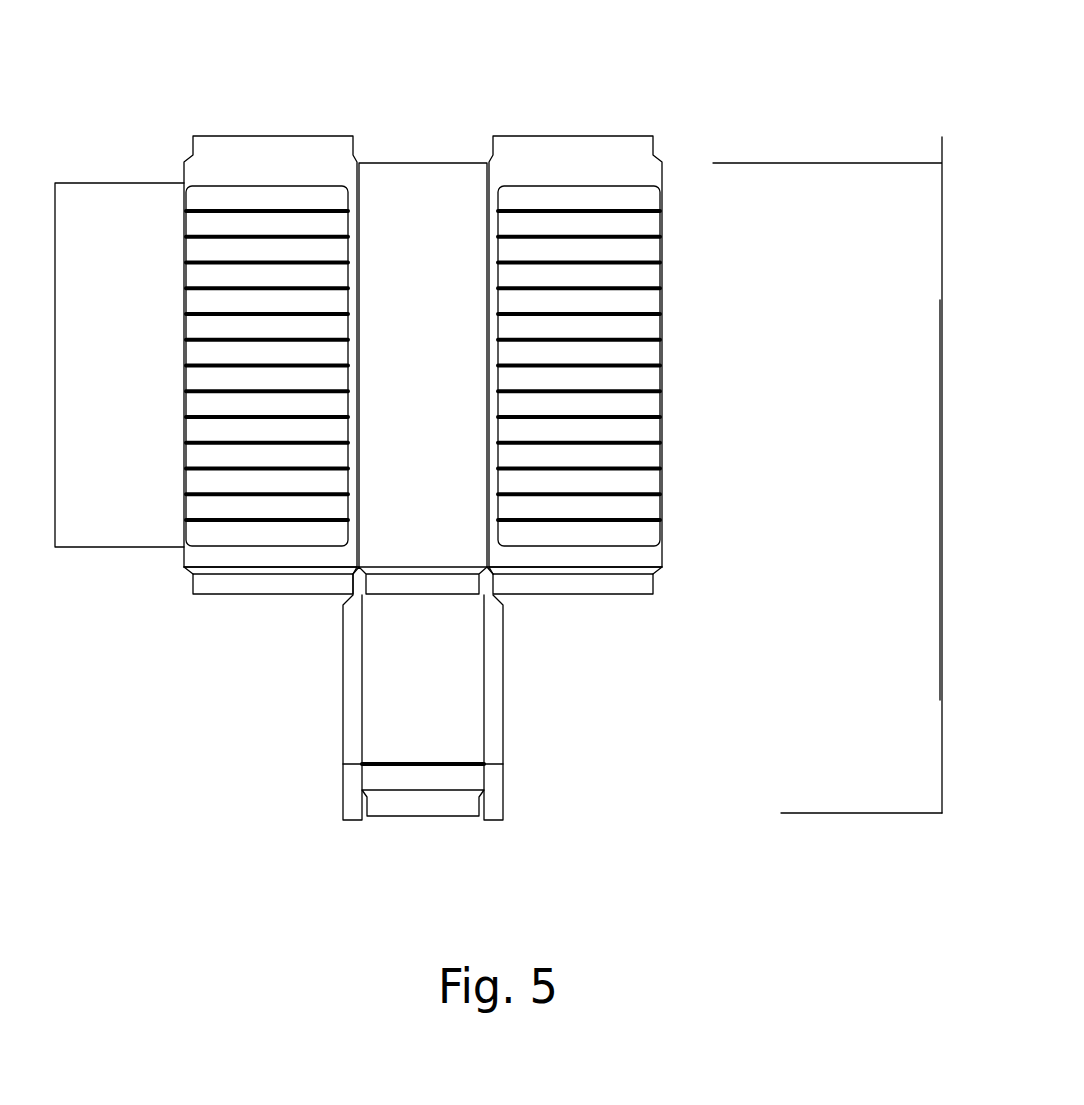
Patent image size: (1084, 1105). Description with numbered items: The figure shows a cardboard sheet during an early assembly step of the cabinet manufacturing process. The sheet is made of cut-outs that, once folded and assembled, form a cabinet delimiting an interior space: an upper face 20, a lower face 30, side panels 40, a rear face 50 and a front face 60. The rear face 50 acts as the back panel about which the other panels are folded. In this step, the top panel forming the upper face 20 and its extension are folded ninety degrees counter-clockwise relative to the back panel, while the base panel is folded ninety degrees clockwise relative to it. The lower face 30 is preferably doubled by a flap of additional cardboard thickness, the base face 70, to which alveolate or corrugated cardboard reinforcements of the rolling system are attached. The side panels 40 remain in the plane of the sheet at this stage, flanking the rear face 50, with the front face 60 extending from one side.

The upper face 20 is at (430, 163).
The lower face 30 is at (464, 678).
The side panels 40 is at (602, 203).
The rear face 50 is at (393, 187).
The front face 60 is at (85, 210).
The base face 70 is at (432, 816).